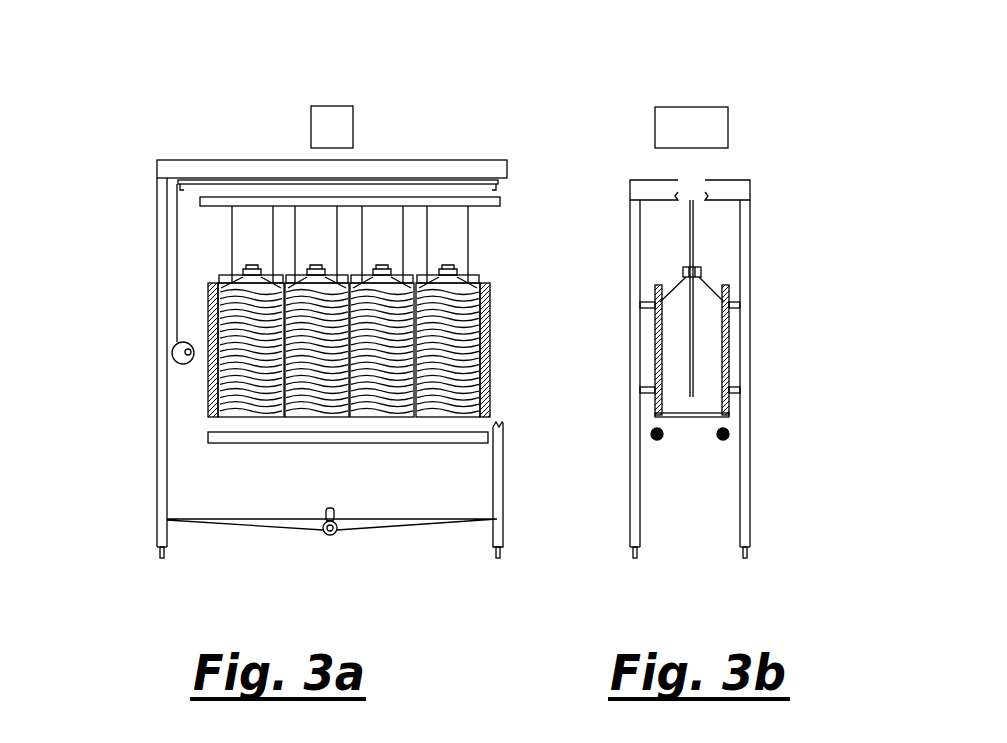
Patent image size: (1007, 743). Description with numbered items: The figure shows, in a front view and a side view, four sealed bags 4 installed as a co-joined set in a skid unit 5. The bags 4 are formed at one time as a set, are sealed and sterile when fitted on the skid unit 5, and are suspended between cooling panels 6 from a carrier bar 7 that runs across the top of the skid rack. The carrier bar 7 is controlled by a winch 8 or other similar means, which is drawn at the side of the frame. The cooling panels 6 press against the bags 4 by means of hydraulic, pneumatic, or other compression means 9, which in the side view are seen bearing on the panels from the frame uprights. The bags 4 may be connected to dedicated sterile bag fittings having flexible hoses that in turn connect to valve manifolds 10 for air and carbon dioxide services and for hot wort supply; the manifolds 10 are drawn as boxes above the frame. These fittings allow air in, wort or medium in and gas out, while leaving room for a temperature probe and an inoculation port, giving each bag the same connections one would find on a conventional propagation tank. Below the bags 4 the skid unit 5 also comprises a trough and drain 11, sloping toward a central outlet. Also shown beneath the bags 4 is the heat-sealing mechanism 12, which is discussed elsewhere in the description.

In FIG. 3A, the skid unit 5 is at (175, 118).
In FIG. 3B, the skid unit 5 is at (695, 82).
In FIG. 3A, the sealed bags 4 is at (218, 280).
In FIG. 3B, the sealed bags 4 is at (692, 298).
In FIG. 3A, the cooling panels 6 is at (212, 327).
In FIG. 3B, the cooling panels 6 is at (731, 340).
In FIG. 3A, the carrier bar 7 is at (498, 200).
In FIG. 3A, the winch 8 is at (172, 355).
In FIG. 3B, the compression means 9 is at (731, 305).
In FIG. 3A, the valve manifolds 10 is at (335, 122).
In FIG. 3B, the valve manifolds 10 is at (713, 122).
In FIG. 3A, the trough and drain 11 is at (326, 536).
In FIG. 3A, the heat-sealing mechanism 12 is at (212, 435).
In FIG. 3B, the heat-sealing mechanism 12 is at (663, 434).